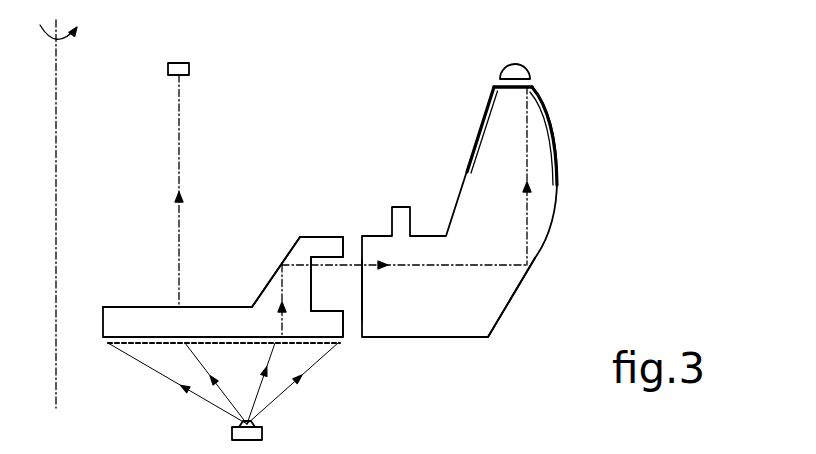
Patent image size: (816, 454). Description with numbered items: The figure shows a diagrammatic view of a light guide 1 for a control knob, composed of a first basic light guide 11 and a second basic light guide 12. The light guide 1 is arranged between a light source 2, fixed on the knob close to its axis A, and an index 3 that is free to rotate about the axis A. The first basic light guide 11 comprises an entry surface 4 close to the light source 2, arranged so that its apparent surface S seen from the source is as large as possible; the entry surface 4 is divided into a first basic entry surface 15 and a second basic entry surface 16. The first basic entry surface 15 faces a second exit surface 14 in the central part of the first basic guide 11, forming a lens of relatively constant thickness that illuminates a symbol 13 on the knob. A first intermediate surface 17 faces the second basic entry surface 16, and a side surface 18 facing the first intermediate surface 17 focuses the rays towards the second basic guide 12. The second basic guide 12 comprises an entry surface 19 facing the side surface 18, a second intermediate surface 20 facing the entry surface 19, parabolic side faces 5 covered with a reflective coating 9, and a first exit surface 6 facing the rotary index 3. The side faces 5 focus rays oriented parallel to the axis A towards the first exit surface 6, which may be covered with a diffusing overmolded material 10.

The light guide 1 is at (383, 378).
The light source 2 is at (262, 432).
The index 3 is at (523, 63).
The entry surface 4 is at (168, 344).
The side faces 5 is at (553, 138).
The first exit surface 6 is at (497, 92).
The reflective coating 9 is at (475, 142).
The diffusing overmolded material 10 is at (530, 85).
The first basic light guide 11 is at (242, 333).
The second basic light guide 12 is at (470, 309).
The symbol 13 is at (189, 69).
The second exit surface 14 is at (153, 306).
The first basic entry surface 15 is at (198, 332).
The second basic entry surface 16 is at (290, 333).
The first intermediate surface 17 is at (270, 277).
The side surface 18 is at (311, 272).
The entry surface 19 is at (362, 287).
The second intermediate surface 20 is at (523, 276).
The axis A is at (56, 173).
The apparent surface S is at (218, 345).